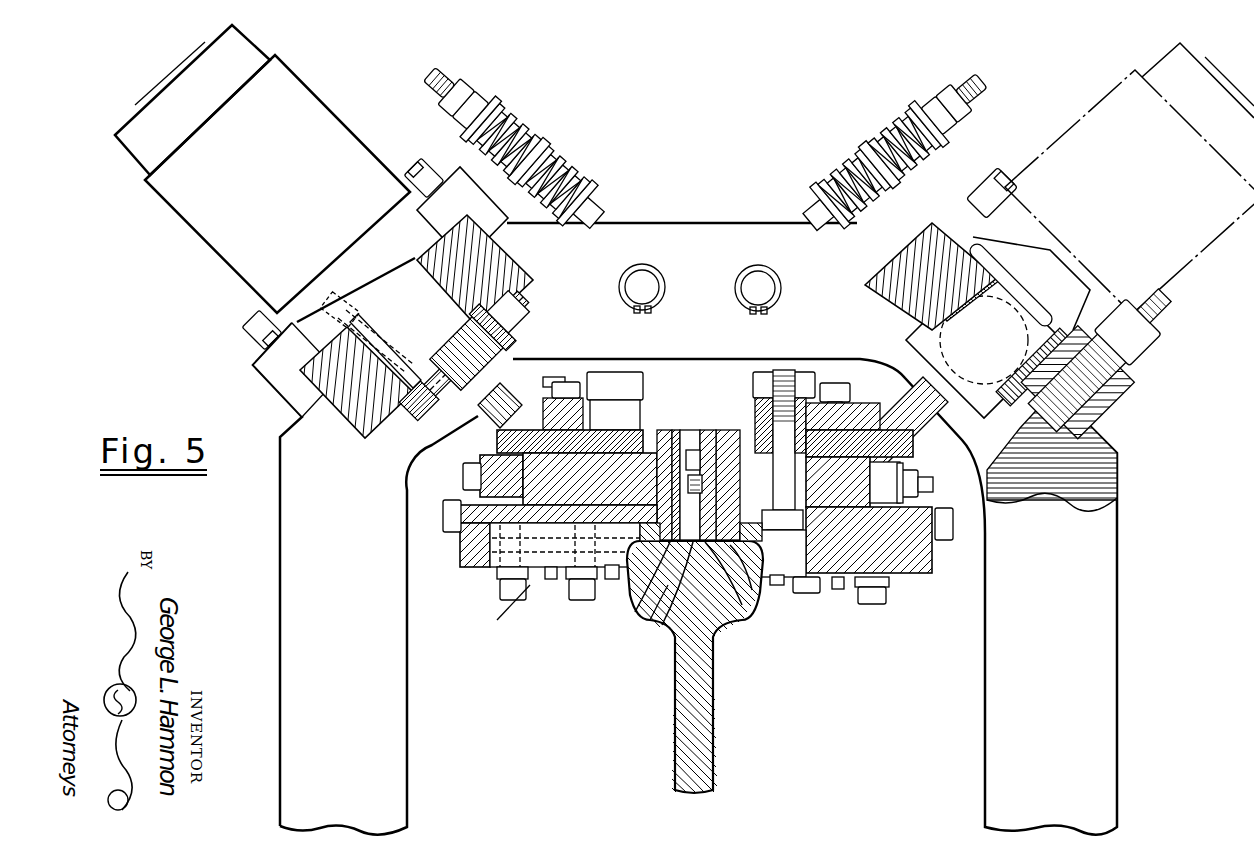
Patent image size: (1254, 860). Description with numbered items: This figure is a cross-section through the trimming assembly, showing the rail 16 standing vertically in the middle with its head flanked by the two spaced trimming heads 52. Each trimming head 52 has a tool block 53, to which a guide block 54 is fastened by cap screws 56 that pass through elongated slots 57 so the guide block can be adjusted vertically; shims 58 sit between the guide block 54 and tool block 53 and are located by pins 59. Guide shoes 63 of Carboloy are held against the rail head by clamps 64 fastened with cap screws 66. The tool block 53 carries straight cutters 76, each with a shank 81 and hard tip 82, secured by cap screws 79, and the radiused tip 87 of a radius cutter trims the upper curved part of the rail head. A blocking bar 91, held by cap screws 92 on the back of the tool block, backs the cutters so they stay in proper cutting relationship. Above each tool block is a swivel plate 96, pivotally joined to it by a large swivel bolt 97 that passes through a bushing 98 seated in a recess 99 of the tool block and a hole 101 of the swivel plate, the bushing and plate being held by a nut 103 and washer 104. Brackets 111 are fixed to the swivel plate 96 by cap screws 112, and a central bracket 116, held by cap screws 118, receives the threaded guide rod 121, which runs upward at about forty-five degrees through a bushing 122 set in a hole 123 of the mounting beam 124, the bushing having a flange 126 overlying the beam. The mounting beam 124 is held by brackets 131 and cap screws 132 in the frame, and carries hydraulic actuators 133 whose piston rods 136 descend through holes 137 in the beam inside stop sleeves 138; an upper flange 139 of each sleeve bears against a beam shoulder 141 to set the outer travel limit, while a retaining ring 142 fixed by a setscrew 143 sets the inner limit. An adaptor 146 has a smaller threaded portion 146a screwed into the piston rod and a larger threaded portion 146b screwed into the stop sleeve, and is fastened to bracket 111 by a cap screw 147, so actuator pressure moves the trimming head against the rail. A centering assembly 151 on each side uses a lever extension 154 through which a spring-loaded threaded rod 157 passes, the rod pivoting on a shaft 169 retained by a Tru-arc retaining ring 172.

The rail 16 is at (700, 690).
The trimming heads 52 is at (478, 617).
The tool block 53 is at (555, 580).
The guide block 54 is at (696, 475).
The cap screws 56 is at (693, 474).
The elongated slots 57 is at (696, 458).
The shims 58 is at (693, 471).
The pins 59 is at (718, 471).
The guide shoes 63 is at (645, 545).
The clamps 64 is at (694, 587).
The cap screws 66 is at (660, 622).
The straight cutters 76 is at (509, 610).
The cap screws 79 is at (500, 592).
The shank 81 is at (552, 582).
The tip 82 is at (608, 580).
The tip 87 is at (640, 530).
The blocking bar 91 is at (470, 567).
The cap screws 92 is at (452, 532).
The swivel plate 96 is at (625, 430).
The swivel bolt 97 is at (620, 374).
The bushing 98 is at (605, 421).
The recess 99 is at (905, 466).
The hole 101 is at (834, 399).
The nut 103 is at (640, 378).
The washer 104 is at (608, 378).
The brackets 111 is at (480, 458).
The cap screws 112 is at (462, 476).
The bracket 116 is at (920, 472).
The cap screws 118 is at (565, 382).
The guide rod 121 is at (922, 386).
The bushing 122 is at (984, 340).
The hole 123 is at (915, 370).
The mounting beam 124 is at (495, 270).
The flange 126 is at (975, 255).
The brackets 131 is at (442, 211).
The cap screws 132 is at (418, 172).
The hydraulic actuators 133 is at (272, 178).
The piston rod 136 is at (384, 315).
The hole 137 is at (360, 300).
The stop sleeve 138 is at (488, 350).
The upper flange 139 is at (505, 318).
The shoulder 141 is at (380, 425).
The retaining ring 142 is at (528, 355).
The setscrew 143 is at (478, 418).
The adaptor 146 is at (515, 345).
The smaller threaded portion 146a is at (420, 408).
The larger threaded portion 146b is at (539, 383).
The cap screw 147 is at (554, 411).
The centering assembly 151 is at (590, 150).
The lever extension 154 is at (540, 155).
The threaded rod 157 is at (430, 70).
The shaft 169 is at (658, 282).
The retaining ring 172 is at (645, 266).